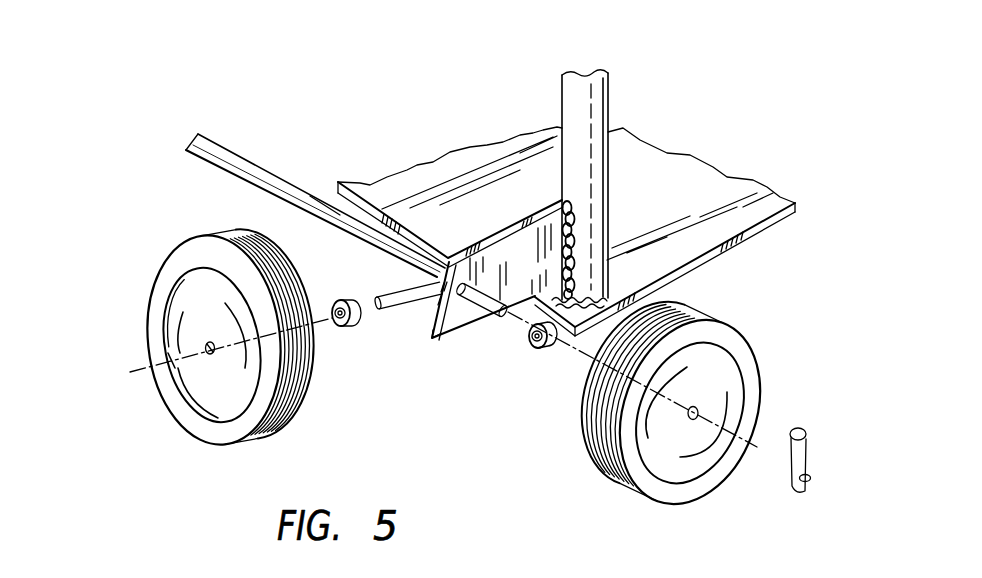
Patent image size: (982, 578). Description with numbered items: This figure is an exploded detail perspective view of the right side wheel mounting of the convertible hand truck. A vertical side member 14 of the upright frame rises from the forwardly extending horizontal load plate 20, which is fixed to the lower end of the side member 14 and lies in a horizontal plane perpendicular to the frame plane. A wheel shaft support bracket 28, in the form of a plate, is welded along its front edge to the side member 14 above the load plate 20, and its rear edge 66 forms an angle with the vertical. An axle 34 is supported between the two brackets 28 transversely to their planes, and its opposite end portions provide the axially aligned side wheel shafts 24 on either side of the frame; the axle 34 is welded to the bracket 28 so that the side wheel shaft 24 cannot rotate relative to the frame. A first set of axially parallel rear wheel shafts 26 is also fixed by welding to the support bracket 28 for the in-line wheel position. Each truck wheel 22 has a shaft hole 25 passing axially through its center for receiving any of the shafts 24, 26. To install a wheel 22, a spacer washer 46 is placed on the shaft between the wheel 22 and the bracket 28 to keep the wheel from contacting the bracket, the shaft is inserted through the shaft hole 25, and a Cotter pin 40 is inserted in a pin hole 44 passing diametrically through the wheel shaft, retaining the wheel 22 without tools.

The side member 14 is at (577, 106).
The load plate 20 is at (397, 188).
The truck wheel 22 is at (155, 277).
The side wheel shaft 24 is at (455, 303).
The shaft hole 25 is at (207, 349).
The rear wheel shaft 26 is at (355, 265).
The wheel shaft support bracket 28 is at (540, 240).
The axle 34 is at (243, 163).
The Cotter pin 40 is at (802, 430).
The pin hole 44 is at (378, 296).
The spacer washer 46 is at (352, 331).
The rear edge 66 is at (430, 340).